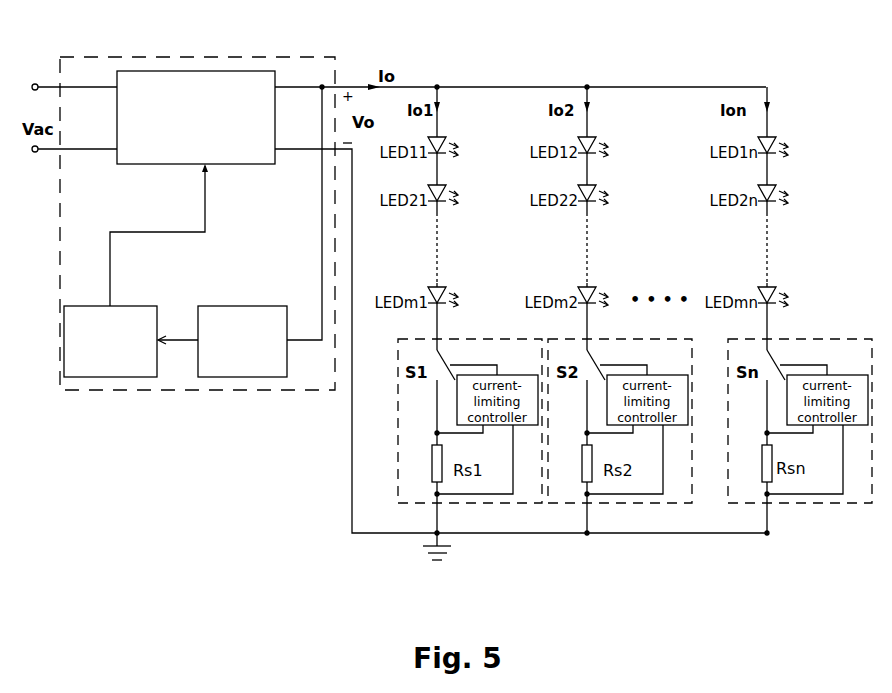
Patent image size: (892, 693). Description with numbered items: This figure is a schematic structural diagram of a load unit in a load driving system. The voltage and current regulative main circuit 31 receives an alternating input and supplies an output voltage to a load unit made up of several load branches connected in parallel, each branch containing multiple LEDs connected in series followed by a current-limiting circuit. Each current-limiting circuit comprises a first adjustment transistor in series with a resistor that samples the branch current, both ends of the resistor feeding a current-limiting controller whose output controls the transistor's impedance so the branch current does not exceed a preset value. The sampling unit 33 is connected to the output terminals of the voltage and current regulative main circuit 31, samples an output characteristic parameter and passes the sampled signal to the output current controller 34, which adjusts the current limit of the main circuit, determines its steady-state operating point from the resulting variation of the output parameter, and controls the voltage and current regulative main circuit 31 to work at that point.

The voltage and current regulative main circuit 31 is at (196, 89).
The sampling unit 33 is at (246, 367).
The output current controller 34 is at (116, 370).